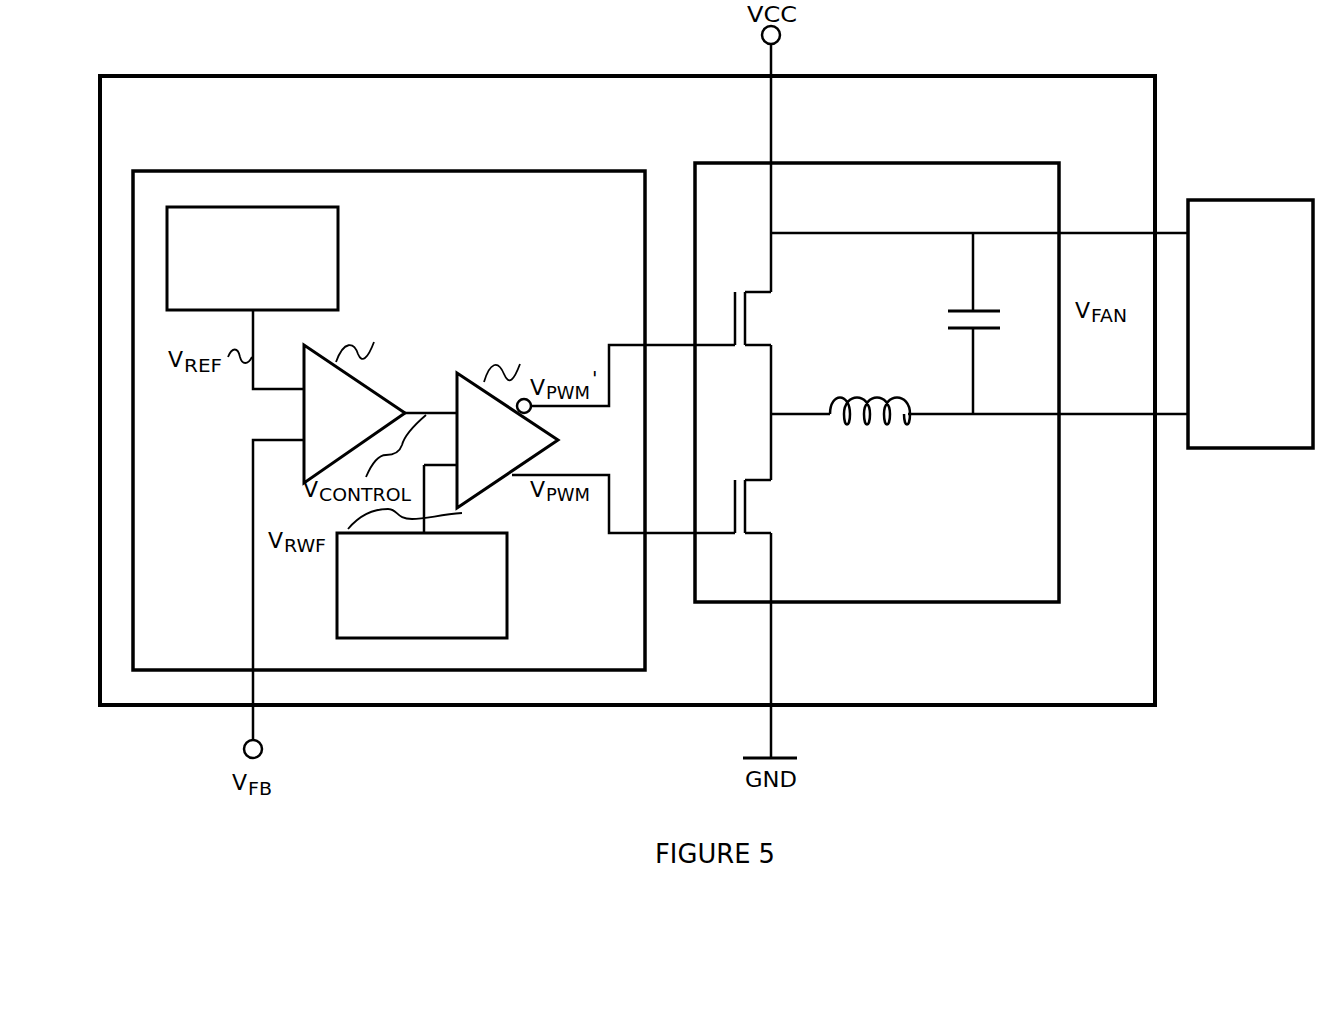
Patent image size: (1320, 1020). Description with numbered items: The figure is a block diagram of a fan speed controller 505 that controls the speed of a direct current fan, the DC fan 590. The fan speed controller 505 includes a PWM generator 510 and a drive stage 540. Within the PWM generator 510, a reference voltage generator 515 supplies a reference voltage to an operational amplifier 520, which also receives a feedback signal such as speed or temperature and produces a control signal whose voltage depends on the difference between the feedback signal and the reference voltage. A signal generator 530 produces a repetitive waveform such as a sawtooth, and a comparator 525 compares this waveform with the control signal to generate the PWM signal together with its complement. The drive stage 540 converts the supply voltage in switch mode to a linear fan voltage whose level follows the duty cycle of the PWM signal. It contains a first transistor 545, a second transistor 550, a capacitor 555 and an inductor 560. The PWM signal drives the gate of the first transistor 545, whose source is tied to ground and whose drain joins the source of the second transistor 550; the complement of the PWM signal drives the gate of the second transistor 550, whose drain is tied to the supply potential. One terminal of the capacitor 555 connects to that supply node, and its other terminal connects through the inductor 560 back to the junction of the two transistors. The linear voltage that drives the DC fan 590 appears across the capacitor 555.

The fan speed controller 505 is at (465, 107).
The pulse width modulation (PWM) generator 510 is at (635, 206).
The reference voltage generator 515 is at (330, 238).
The operational amplifier 520 is at (380, 431).
The comparator 525 is at (530, 452).
The signal generator 530 is at (498, 564).
The drive stage circuit 540 is at (1050, 522).
The first transistor 545 is at (760, 530).
The second transistor 550 is at (760, 342).
The capacitor 555 is at (1050, 282).
The inductor 560 is at (948, 369).
The DC fan 590 is at (1295, 234).